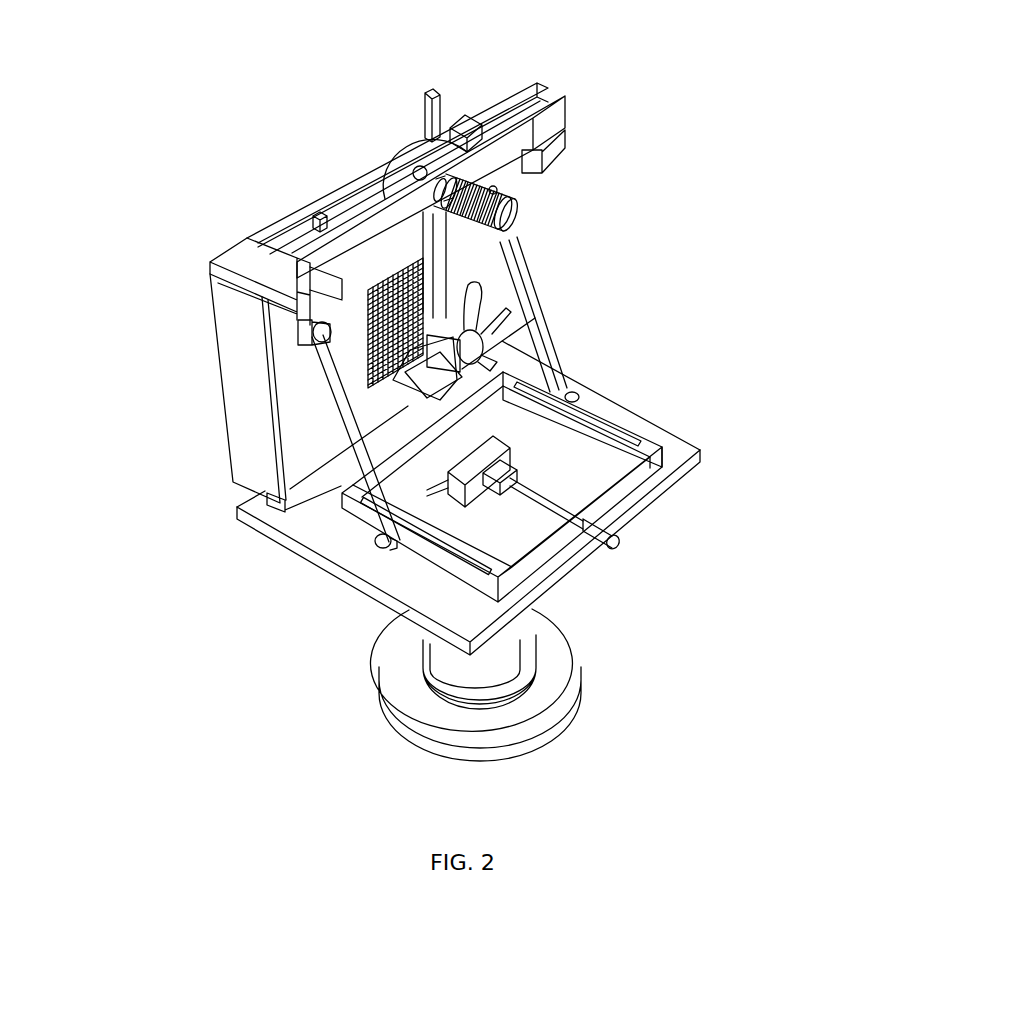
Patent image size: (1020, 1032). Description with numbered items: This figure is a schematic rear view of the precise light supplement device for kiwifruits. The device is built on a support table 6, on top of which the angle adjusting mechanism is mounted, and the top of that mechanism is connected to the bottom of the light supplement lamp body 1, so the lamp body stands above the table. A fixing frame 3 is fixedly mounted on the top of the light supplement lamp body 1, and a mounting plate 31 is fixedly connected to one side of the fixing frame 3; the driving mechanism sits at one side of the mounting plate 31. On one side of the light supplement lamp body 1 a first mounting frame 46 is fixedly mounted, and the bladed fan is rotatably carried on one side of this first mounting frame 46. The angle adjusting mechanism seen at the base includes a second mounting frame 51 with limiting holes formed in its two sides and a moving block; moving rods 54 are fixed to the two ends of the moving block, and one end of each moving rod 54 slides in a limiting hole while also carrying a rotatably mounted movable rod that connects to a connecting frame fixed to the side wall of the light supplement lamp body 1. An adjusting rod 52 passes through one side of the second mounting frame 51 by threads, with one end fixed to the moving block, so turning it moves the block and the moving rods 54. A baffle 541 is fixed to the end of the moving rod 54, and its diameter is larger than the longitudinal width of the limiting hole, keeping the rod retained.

The light supplement lamp body 1 is at (250, 378).
The fixing frame 3 is at (567, 157).
The mounting plate 31 is at (567, 117).
The first mounting frame 46 is at (510, 322).
The second mounting frame 51 is at (640, 485).
The adjusting rod 52 is at (617, 543).
The moving rod 54 is at (428, 505).
The baffle 541 is at (385, 543).
The support table 6 is at (320, 552).